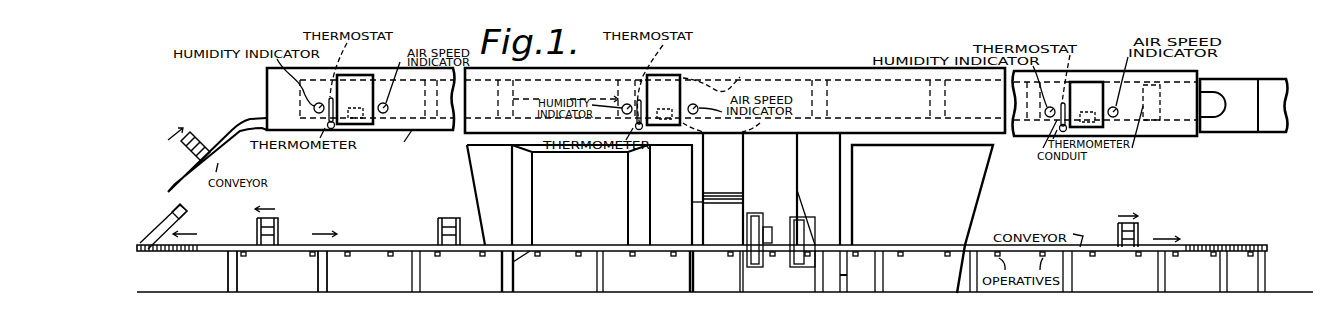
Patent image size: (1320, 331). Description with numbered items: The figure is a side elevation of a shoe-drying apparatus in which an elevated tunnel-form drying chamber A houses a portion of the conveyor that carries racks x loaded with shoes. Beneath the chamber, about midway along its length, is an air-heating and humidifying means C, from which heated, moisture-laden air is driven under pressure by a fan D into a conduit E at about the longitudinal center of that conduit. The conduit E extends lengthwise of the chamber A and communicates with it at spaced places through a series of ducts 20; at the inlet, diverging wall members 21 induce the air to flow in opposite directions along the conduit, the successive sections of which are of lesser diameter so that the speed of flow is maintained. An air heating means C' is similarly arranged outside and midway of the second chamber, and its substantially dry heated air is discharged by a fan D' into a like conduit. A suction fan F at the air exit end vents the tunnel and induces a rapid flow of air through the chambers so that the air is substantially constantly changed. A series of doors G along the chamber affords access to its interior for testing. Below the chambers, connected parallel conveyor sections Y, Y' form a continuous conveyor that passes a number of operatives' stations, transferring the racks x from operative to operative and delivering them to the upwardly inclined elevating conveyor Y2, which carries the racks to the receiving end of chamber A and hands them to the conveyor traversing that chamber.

The ducts 20 is at (565, 101).
The diverging wall members 21 is at (735, 82).
The drying chamber A is at (812, 76).
The conduit E is at (602, 79).
The doors G is at (353, 86).
The suction fan F is at (1240, 134).
The air-heating and humidifying means C is at (579, 234).
The fan D is at (732, 230).
The air heating means C' is at (921, 238).
The fan D' is at (836, 200).
The racks x is at (438, 232).
The conveyor section Y is at (348, 257).
The conveyor section Y' is at (229, 255).
The elevating conveyor Y2 is at (192, 188).